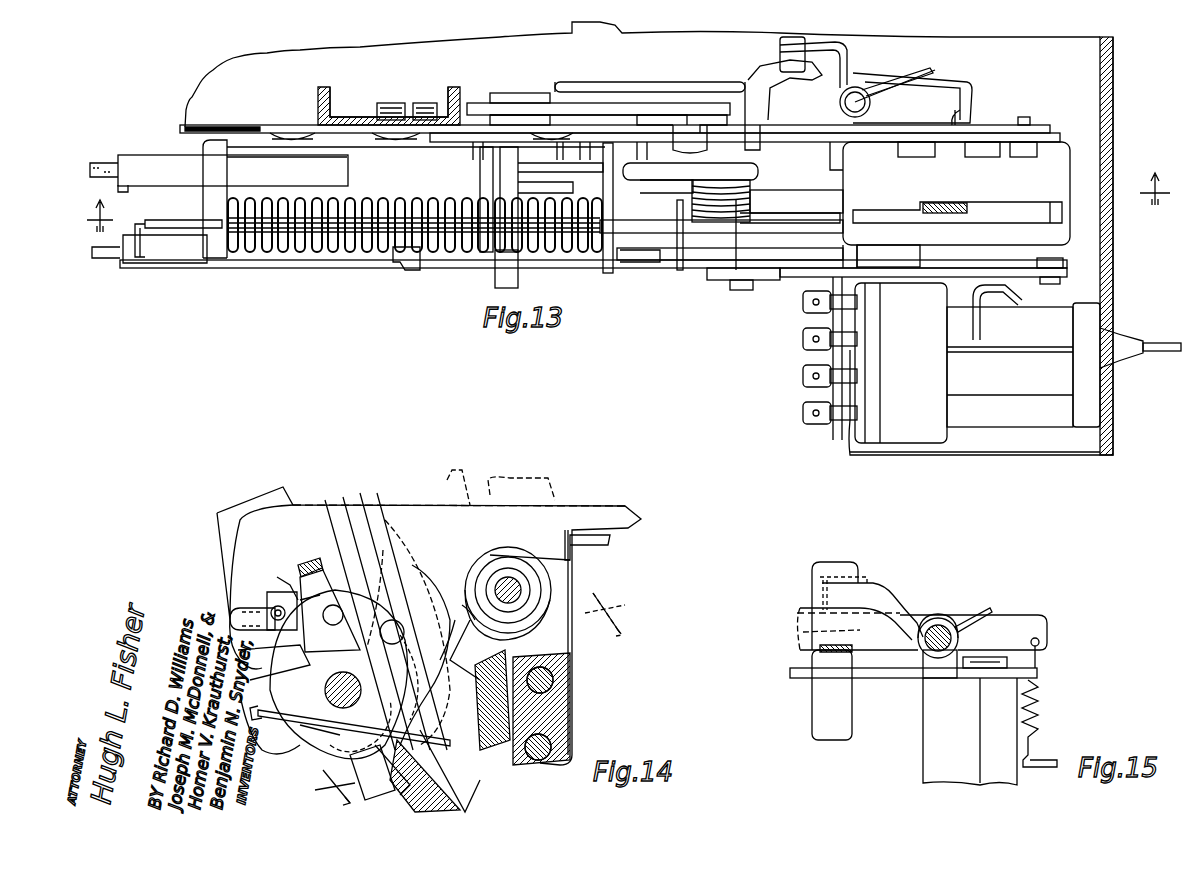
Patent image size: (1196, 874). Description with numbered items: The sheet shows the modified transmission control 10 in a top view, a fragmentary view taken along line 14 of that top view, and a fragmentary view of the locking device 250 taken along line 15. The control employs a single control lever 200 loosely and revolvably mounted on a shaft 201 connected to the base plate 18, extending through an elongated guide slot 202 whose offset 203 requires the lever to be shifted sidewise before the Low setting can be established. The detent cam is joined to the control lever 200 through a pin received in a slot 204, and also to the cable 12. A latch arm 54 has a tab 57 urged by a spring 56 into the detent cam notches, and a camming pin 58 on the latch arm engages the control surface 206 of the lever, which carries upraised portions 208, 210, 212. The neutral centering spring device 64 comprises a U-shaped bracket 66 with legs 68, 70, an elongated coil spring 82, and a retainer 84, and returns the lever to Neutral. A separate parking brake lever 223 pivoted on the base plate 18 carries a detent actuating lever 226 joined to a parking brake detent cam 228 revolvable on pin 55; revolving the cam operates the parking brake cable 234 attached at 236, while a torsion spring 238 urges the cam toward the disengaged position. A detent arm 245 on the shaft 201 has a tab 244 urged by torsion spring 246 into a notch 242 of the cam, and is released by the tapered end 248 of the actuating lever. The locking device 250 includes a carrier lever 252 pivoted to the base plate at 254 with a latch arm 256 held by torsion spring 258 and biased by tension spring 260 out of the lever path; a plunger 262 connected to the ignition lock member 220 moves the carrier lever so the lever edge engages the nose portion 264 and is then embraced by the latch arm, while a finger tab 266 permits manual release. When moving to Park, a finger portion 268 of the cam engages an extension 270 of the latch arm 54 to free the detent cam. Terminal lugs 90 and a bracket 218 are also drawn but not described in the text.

In FIG. 13, the control 10 is at (635, 265).
In FIG. 13, the cable 12 is at (102, 165).
In FIG. 13, the section line 14 is at (621, 188).
In FIG. 14, the section line 15 is at (464, 699).
In FIG. 13, the base plate 18 is at (283, 127).
In FIG. 14, the base plate 18 is at (575, 690).
In FIG. 13, the latch arm 54 is at (672, 240).
In FIG. 14, the latch arm 54 is at (274, 662).
In FIG. 14, the pin 55 is at (315, 734).
In FIG. 13, the spring 56 is at (752, 190).
In FIG. 14, the tab 57 is at (290, 575).
In FIG. 13, the camming pin 58 is at (765, 230).
In FIG. 14, the camming pin 58 is at (313, 592).
In FIG. 13, the neutral centering spring device 64 is at (330, 255).
In FIG. 13, the U-shaped bracket 66 is at (462, 127).
In FIG. 13, the bracket leg 68 is at (220, 262).
In FIG. 13, the bracket leg 70 is at (597, 267).
In FIG. 13, the coil spring 82 is at (395, 270).
In FIG. 13, the retainer 84 is at (158, 228).
In FIG. 13, the terminal lugs 90 is at (800, 292).
In FIG. 13, the control lever 200 is at (938, 203).
In FIG. 14, the control lever 200 is at (560, 495).
In FIG. 13, the shaft 201 is at (880, 290).
In FIG. 14, the shaft 201 is at (523, 585).
In FIG. 13, the guide slot 202 is at (1005, 205).
In FIG. 13, the offset 203 is at (950, 212).
In FIG. 14, the slot 204 is at (493, 478).
In FIG. 14, the control surface 206 is at (318, 556).
In FIG. 14, the upraised portion 208 is at (378, 545).
In FIG. 14, the upraised portion 210 is at (339, 674).
In FIG. 14, the upraised portion 212 is at (360, 724).
In FIG. 13, the bracket 218 is at (1017, 296).
In FIG. 13, the ignition lock member 220 is at (1002, 397).
In FIG. 15, the ignition lock member 220 is at (922, 720).
In FIG. 14, the parking brake lever 223 is at (410, 800).
In FIG. 15, the parking brake lever 223 is at (845, 670).
In FIG. 14, the detent actuating lever 226 is at (390, 500).
In FIG. 13, the parking brake detent cam 228 is at (758, 170).
In FIG. 14, the parking brake detent cam 228 is at (405, 610).
In FIG. 13, the parking brake cable 234 is at (104, 260).
In FIG. 14, the parking brake cable 234 is at (240, 610).
In FIG. 14, the cable connection 236 is at (275, 610).
In FIG. 13, the torsion spring 238 is at (682, 270).
In FIG. 14, the torsion spring 238 is at (350, 726).
In FIG. 14, the notch 242 is at (414, 677).
In FIG. 14, the tab 244 is at (510, 762).
In FIG. 14, the detent arm 245 is at (490, 745).
In FIG. 14, the torsion spring 246 is at (600, 555).
In FIG. 14, the tapered end 248 is at (468, 760).
In FIG. 13, the locking device 250 is at (880, 62).
In FIG. 15, the locking device 250 is at (927, 594).
In FIG. 13, the carrier lever 252 is at (972, 90).
In FIG. 15, the carrier lever 252 is at (1032, 615).
In FIG. 13, the pivot 254 is at (845, 108).
In FIG. 15, the pivot 254 is at (950, 625).
In FIG. 13, the latch arm 256 is at (847, 42).
In FIG. 15, the latch arm 256 is at (870, 585).
In FIG. 13, the torsion spring 258 is at (930, 70).
In FIG. 15, the torsion spring 258 is at (985, 630).
In FIG. 13, the tension spring 260 is at (968, 115).
In FIG. 15, the tension spring 260 is at (1040, 710).
In FIG. 15, the plunger 262 is at (1036, 660).
In FIG. 15, the nose portion 264 is at (795, 645).
In FIG. 13, the finger tab 266 is at (775, 40).
In FIG. 15, the finger tab 266 is at (840, 600).
In FIG. 14, the finger portion 268 is at (350, 762).
In FIG. 14, the extension 270 is at (403, 770).